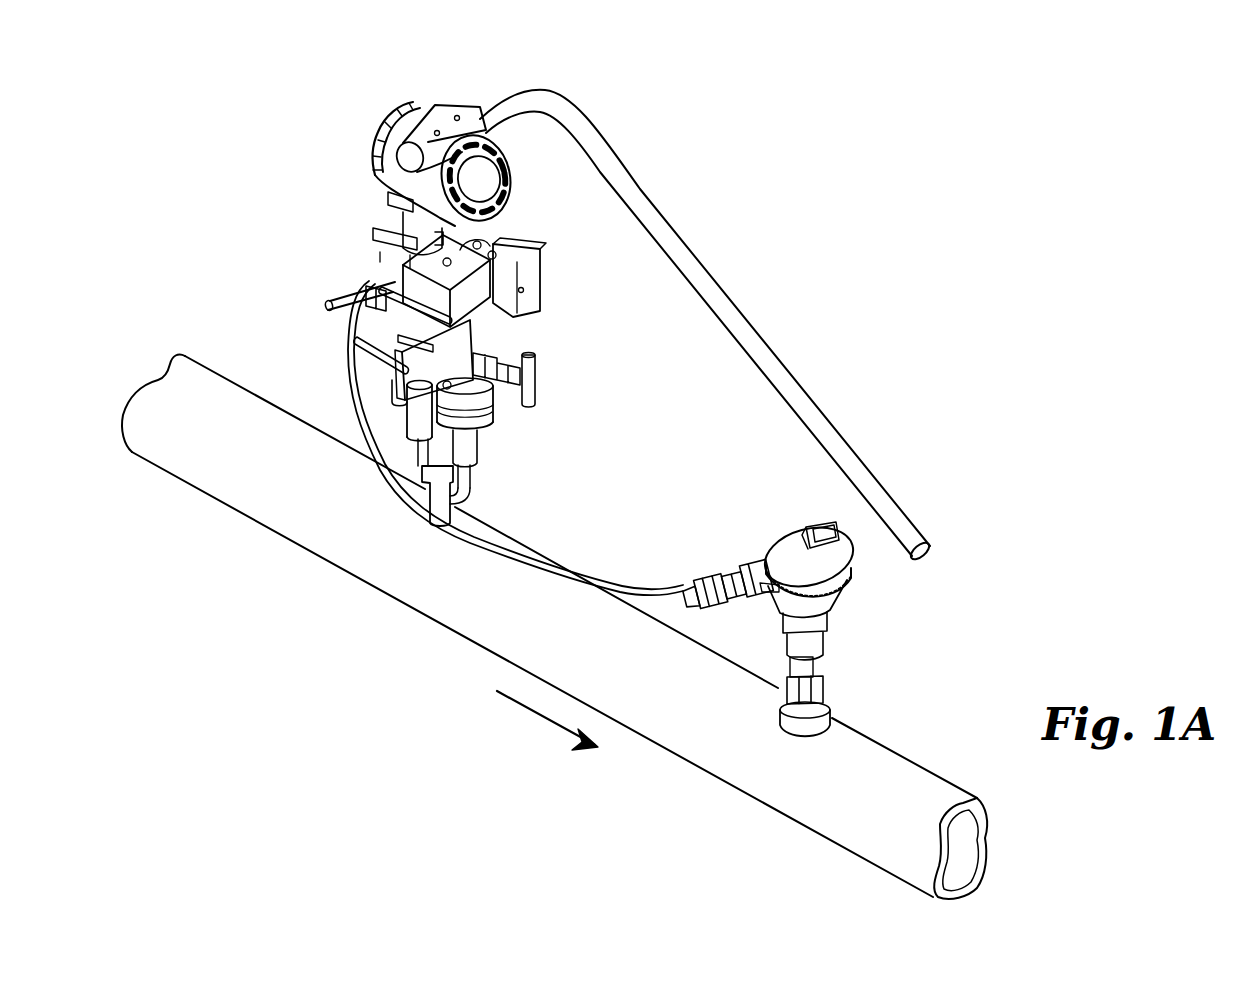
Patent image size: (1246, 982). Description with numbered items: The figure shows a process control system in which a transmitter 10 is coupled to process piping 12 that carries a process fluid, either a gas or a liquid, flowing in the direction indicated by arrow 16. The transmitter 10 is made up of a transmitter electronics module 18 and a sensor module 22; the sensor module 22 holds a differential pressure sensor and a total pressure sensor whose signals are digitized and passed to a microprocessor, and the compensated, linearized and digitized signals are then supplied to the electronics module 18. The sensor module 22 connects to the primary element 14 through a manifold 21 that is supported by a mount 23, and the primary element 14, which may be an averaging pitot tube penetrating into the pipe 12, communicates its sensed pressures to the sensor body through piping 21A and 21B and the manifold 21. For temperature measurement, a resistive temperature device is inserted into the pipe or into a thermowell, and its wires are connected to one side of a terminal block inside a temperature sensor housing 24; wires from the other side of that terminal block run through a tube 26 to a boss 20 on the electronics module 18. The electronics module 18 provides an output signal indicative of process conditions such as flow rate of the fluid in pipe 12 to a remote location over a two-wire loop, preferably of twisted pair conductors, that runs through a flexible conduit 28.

The transmitter 10 is at (437, 100).
The process piping 12 is at (221, 470).
The primary element 14 is at (467, 503).
The arrow 16 is at (497, 690).
The transmitter electronics module 18 is at (393, 166).
The boss 20 is at (382, 251).
The manifold 21 is at (482, 342).
The piping 21A is at (462, 455).
The piping 21B is at (410, 422).
The sensor module 22 is at (494, 255).
The mount 23 is at (541, 263).
The temperature sensor housing 24 is at (793, 527).
The tube 26 is at (613, 590).
The flexible conduit 28 is at (697, 269).